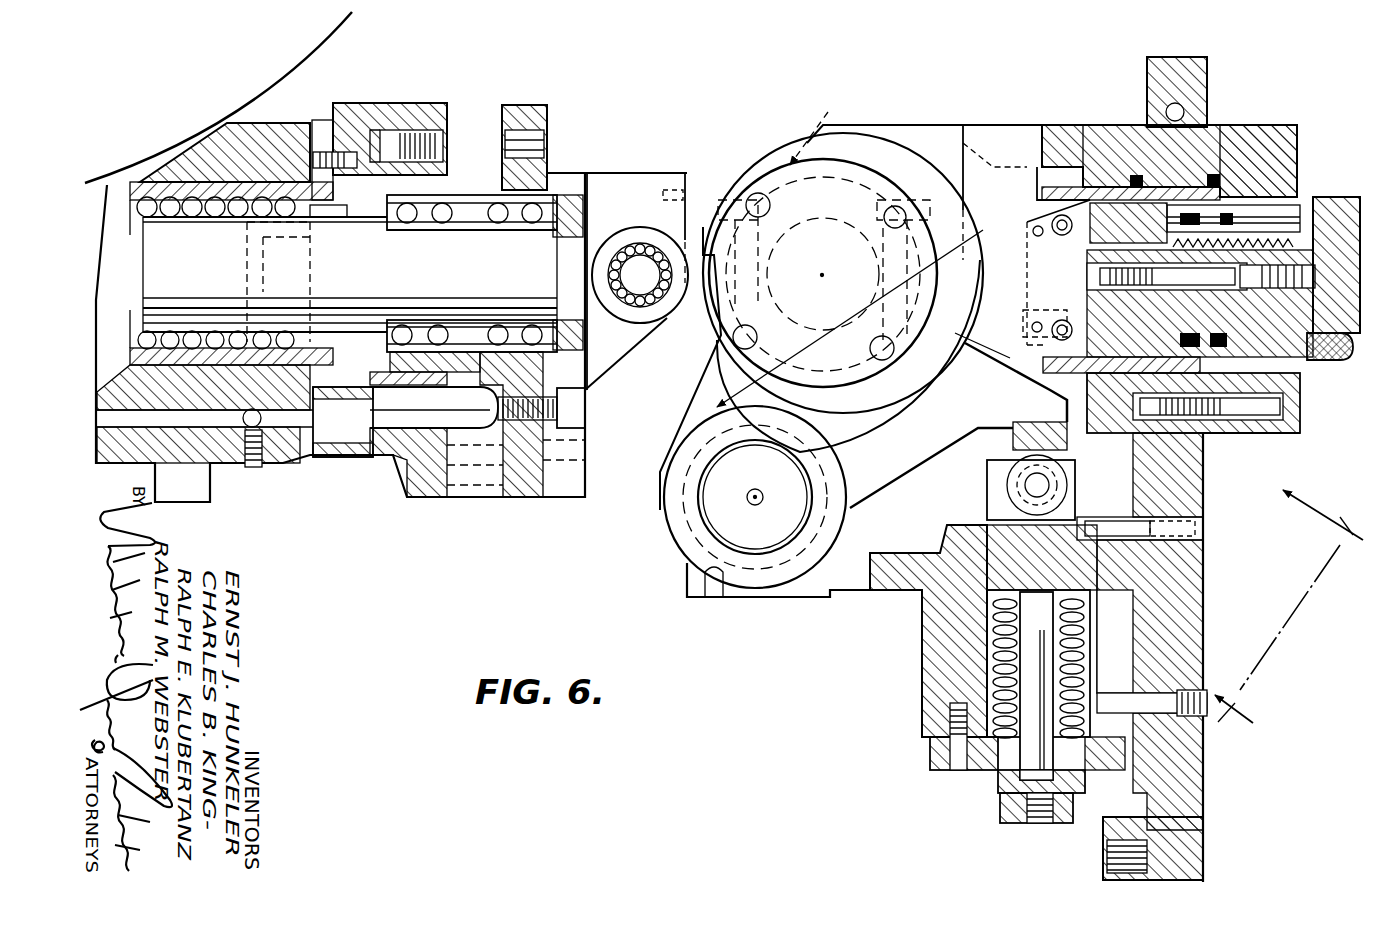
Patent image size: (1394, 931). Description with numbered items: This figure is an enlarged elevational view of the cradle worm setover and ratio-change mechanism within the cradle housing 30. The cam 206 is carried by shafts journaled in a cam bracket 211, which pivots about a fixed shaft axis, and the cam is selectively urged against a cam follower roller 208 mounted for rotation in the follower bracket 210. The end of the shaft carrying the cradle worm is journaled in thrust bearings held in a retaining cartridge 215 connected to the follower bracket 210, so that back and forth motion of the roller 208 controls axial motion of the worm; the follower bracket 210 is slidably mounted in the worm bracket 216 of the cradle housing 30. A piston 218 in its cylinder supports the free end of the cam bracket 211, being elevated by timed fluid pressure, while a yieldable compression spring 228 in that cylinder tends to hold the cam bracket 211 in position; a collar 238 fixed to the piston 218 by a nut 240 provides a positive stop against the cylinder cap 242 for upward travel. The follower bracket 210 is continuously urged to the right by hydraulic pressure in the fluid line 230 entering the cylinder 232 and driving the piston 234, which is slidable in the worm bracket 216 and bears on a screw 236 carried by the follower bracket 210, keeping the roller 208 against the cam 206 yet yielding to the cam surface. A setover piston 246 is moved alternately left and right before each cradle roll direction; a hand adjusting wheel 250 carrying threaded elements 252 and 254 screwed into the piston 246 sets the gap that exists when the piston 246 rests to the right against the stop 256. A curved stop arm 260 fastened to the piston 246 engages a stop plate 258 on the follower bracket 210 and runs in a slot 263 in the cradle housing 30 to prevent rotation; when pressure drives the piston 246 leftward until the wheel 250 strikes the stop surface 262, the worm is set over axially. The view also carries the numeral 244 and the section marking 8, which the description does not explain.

The cradle housing 30 is at (1207, 82).
The cam 206 is at (762, 150).
The cam follower roller 208 is at (640, 228).
The follower bracket 210 is at (630, 172).
The cam bracket 211 is at (912, 469).
The retaining cartridge 215 is at (530, 106).
The worm bracket 216 is at (213, 468).
The piston 218 is at (987, 525).
The compression spring 228 is at (1007, 640).
The fluid line 230 is at (212, 420).
The cylinder 232 is at (362, 424).
The piston 234 is at (472, 412).
The screw 236 is at (588, 407).
The collar 238 is at (998, 785).
The nut 240 is at (1000, 812).
The cylinder cap 242 is at (937, 740).
The threaded shaft 244 is at (1312, 190).
The setover piston 246 is at (1082, 182).
The hand adjusting wheel 250 is at (1354, 362).
The threaded element 252 is at (1360, 235).
The threaded element 254 is at (1080, 243).
The stop 256 is at (1120, 200).
The stop plate 258 is at (684, 182).
The stop arm 260 is at (967, 345).
The stop surface 262 is at (1300, 190).
The slot 263 is at (995, 171).
The section line 8- 8 is at (1288, 598).